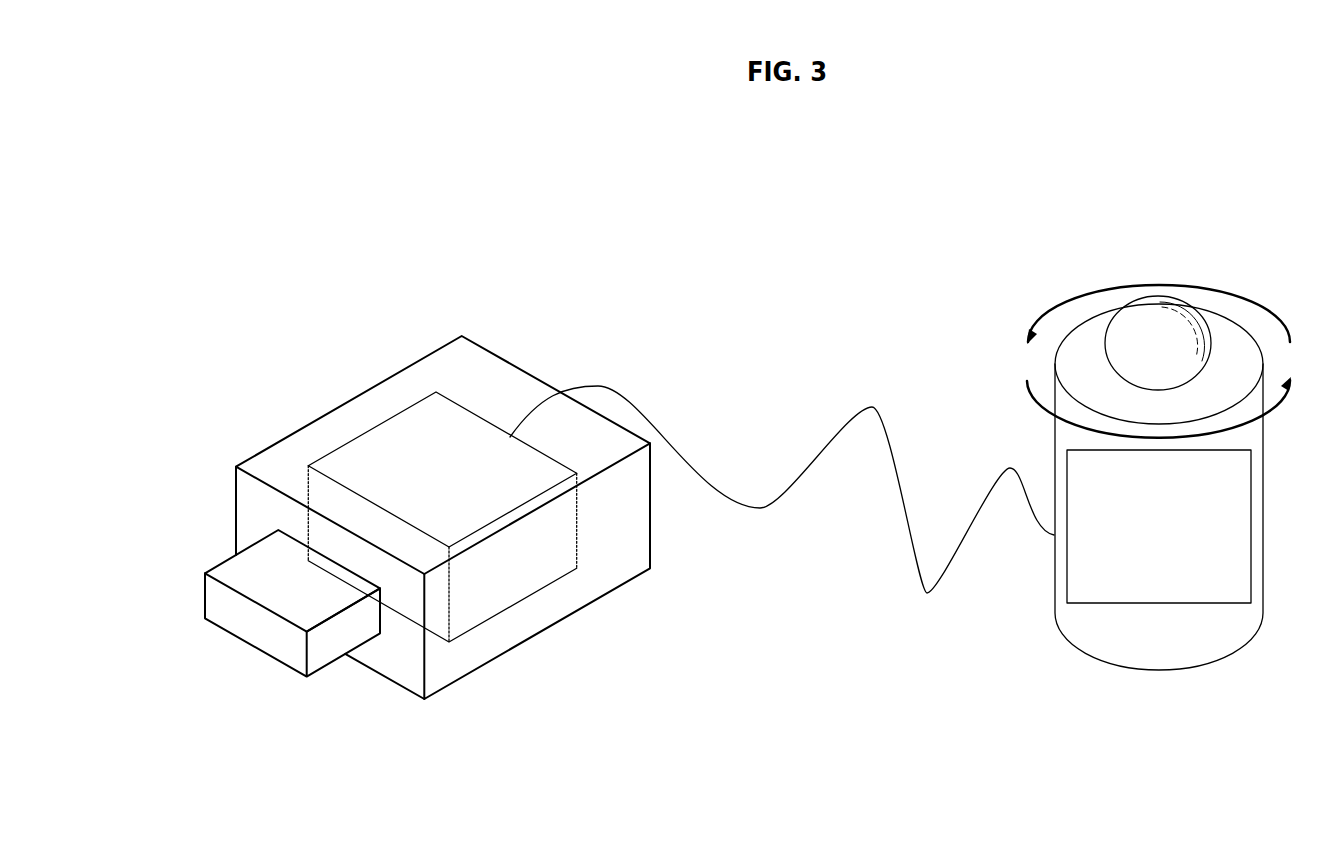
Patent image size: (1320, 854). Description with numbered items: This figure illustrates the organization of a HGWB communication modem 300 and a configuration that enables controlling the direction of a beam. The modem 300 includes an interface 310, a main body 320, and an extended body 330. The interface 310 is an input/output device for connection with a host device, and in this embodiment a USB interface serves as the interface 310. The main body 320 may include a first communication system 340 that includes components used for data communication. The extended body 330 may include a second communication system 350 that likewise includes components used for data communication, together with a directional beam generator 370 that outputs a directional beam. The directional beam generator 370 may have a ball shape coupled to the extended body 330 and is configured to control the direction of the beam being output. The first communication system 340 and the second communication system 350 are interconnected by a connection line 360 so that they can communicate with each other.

The HGWB communication modem 300 is at (696, 208).
The interface 310 is at (235, 560).
The main body 320 is at (422, 358).
The extended body 330 is at (1160, 653).
The first communication system 340 is at (382, 423).
The second communication system 350 is at (1067, 450).
The connection line 360 is at (817, 468).
The directional beam generator 370 is at (1156, 323).